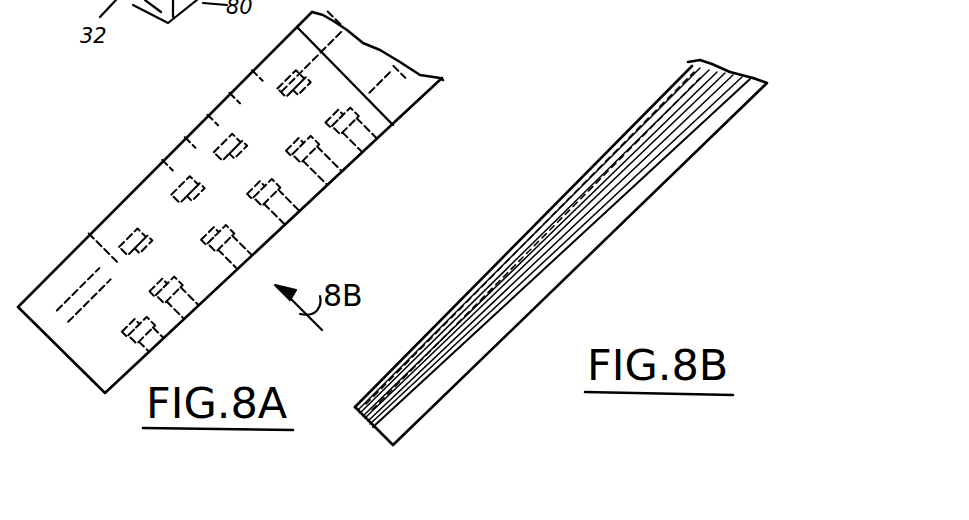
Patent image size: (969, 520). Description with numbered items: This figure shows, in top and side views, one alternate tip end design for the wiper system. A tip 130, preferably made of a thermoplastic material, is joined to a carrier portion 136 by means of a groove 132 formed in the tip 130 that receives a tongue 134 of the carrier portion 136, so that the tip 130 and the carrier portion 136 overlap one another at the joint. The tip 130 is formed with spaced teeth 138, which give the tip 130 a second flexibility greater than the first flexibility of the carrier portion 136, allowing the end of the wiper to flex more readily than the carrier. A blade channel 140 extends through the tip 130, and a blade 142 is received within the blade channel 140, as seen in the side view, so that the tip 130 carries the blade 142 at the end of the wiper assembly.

In FIG. 8A, the tip 130 is at (209, 202).
In FIG. 8B, the tip 130 is at (695, 203).
In FIG. 8A, the groove 132 is at (387, 133).
In FIG. 8B, the groove 132 is at (630, 133).
In FIG. 8A, the tongue 134 is at (366, 50).
In FIG. 8A, the carrier portion 136 is at (428, 89).
In FIG. 8B, the carrier portion 136 is at (683, 72).
In FIG. 8A, the spaced teeth 138 is at (165, 175).
In FIG. 8B, the spaced teeth 138 is at (455, 307).
In FIG. 8A, the blade channel 140 is at (67, 357).
In FIG. 8B, the blade channel 140 is at (383, 380).
In FIG. 8B, the blade 142 is at (445, 391).